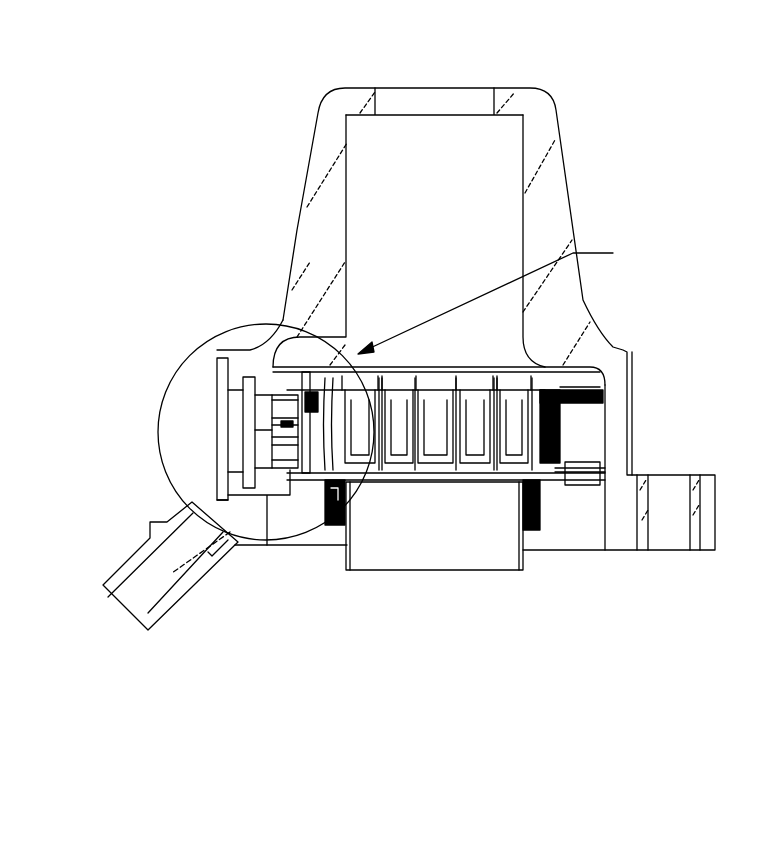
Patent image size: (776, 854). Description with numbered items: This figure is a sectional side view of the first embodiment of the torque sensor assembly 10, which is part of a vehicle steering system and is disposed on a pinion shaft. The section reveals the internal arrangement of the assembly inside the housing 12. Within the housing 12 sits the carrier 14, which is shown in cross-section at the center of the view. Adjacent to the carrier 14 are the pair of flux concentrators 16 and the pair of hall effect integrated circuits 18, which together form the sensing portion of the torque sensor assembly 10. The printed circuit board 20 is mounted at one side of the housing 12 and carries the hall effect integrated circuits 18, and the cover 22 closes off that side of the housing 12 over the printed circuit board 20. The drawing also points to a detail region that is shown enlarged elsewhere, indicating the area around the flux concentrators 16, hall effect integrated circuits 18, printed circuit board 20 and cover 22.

The torque sensor assembly 10 is at (262, 137).
The housing 12 is at (338, 88).
The carrier 14 is at (560, 440).
The flux concentrators 16 is at (298, 470).
The hall effect IC's 18 is at (268, 403).
The printed circuit board 20 is at (252, 480).
The cover 22 is at (218, 435).